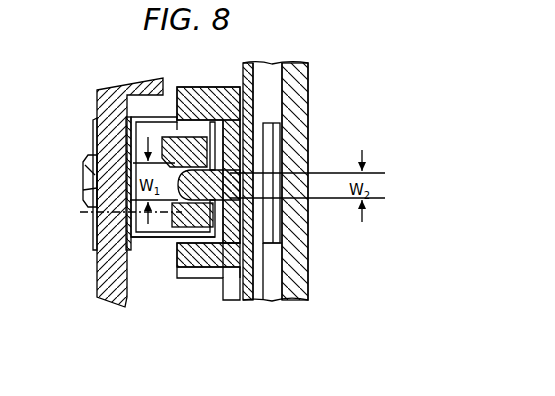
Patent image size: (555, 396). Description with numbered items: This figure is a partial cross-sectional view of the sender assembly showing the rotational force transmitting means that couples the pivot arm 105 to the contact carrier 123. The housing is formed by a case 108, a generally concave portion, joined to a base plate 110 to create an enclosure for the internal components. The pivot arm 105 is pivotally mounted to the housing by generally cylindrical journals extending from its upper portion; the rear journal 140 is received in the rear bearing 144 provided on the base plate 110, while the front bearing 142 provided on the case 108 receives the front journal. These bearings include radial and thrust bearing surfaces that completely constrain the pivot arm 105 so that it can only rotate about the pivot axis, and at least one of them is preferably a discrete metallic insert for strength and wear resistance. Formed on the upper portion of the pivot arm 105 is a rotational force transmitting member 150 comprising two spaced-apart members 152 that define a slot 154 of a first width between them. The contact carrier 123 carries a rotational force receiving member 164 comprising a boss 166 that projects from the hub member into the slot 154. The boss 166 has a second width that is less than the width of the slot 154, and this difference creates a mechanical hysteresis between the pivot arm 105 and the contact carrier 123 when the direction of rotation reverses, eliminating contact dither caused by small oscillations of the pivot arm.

The pivot arm 105 is at (140, 263).
The case 108 is at (295, 82).
The base plate 110 is at (97, 101).
The contact carrier 123 is at (201, 272).
The rear journal 140 is at (83, 168).
The front bearing 142 is at (241, 240).
The rear bearing 144 is at (95, 132).
The rotational force transmitting member 150 is at (156, 135).
The spaced-apart members 152 is at (190, 150).
The slot 154 is at (182, 207).
The rotational force receiving member 164 is at (244, 186).
The boss 166 is at (198, 183).